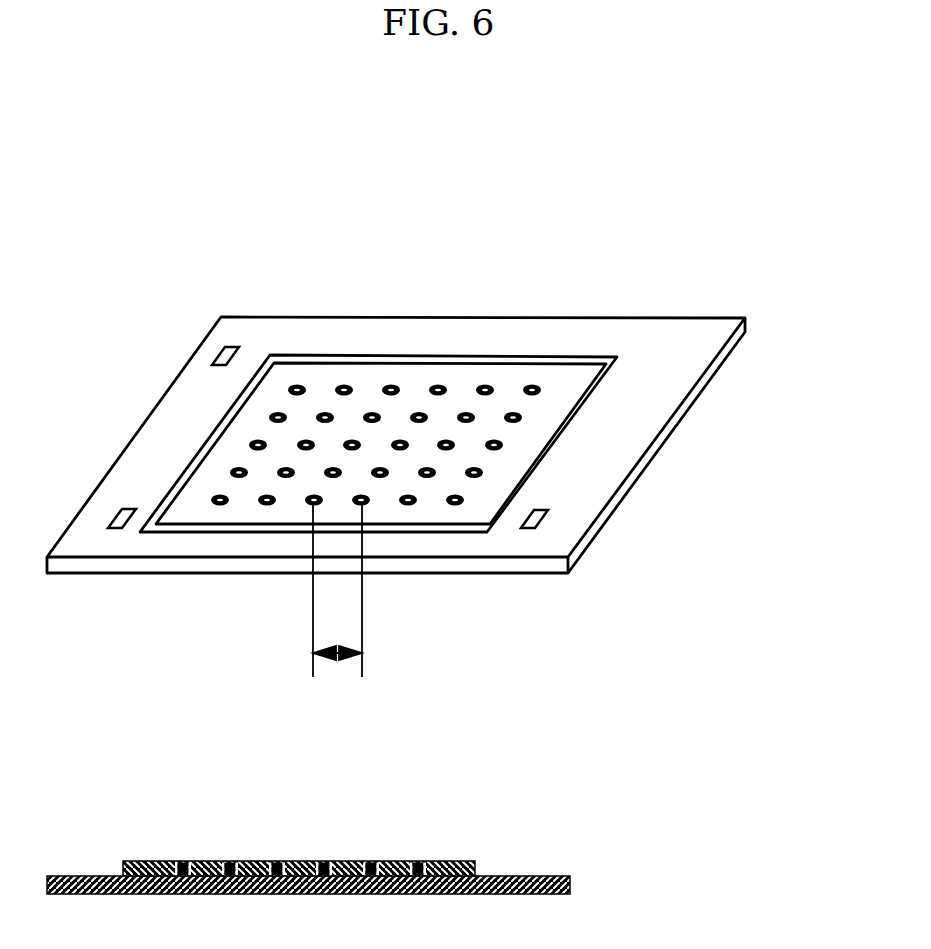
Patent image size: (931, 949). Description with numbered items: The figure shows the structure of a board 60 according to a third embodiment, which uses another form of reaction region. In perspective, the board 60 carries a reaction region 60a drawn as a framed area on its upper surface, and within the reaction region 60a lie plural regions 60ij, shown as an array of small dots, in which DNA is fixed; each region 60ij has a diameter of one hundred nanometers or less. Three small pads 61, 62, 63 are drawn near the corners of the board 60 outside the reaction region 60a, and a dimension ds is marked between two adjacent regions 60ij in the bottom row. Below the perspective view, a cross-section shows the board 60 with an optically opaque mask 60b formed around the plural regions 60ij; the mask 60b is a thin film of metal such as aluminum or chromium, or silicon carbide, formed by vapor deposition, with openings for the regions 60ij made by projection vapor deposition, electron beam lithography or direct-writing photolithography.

The board 60 is at (663, 392).
The reaction region 60a is at (313, 355).
The regions 60ij is at (483, 388).
The optically opaque mask 60b is at (125, 862).
The electrode pad 61 is at (120, 528).
The electrode pad 62 is at (532, 527).
The electrode pad 63 is at (213, 356).
The dot pitch dimension ds is at (338, 658).